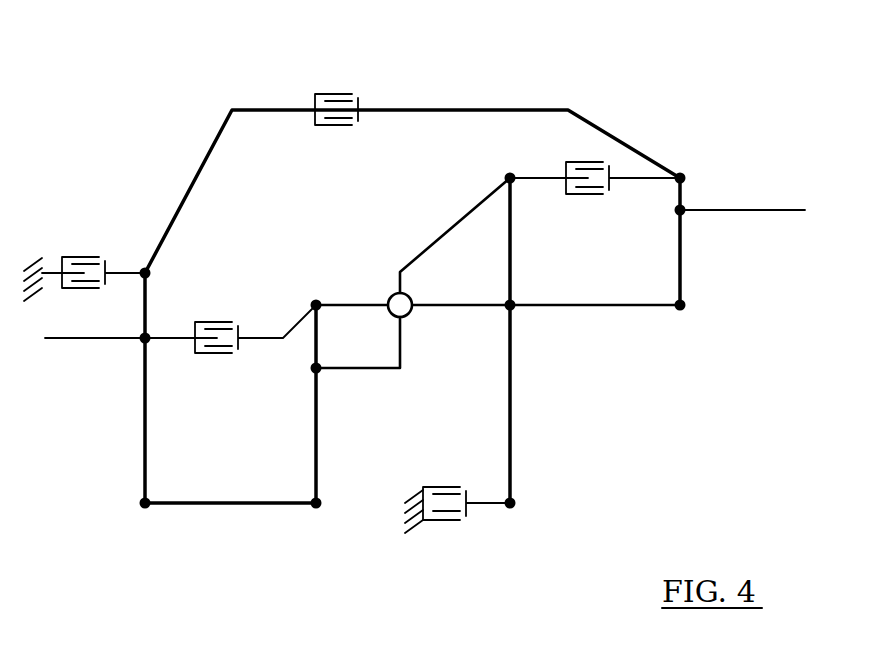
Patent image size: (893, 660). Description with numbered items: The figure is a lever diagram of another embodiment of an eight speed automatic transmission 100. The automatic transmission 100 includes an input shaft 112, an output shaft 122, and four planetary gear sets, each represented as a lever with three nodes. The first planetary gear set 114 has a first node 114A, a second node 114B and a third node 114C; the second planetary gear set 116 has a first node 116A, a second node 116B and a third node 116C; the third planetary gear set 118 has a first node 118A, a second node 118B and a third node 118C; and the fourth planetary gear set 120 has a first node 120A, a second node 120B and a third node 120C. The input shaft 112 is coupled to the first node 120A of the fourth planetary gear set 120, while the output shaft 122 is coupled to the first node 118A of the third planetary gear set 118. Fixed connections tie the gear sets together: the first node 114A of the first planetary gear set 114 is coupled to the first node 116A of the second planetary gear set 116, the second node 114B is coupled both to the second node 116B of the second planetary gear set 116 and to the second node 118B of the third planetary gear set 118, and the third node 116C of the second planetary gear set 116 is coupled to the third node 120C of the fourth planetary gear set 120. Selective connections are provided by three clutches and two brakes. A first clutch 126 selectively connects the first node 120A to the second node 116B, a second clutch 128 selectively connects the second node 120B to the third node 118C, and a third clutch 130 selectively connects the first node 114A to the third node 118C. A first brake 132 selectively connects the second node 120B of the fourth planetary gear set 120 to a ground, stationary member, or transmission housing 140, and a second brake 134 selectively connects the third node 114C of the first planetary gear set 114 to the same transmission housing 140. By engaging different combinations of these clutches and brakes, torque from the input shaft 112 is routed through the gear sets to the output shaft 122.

The eight speed automatic transmission 100 is at (630, 74).
The input shaft 112 is at (100, 343).
The first planetary gear set 114 is at (510, 519).
The first node of the first planetary gear set 114A is at (508, 178).
The second node of the first planetary gear set 114B is at (513, 303).
The third node of the first planetary gear set 114C is at (513, 501).
The second planetary gear set 116 is at (314, 519).
The first node of the second planetary gear set 116A is at (314, 371).
The second node of the second planetary gear set 116B is at (317, 303).
The third node of the second planetary gear set 116C is at (319, 501).
The third planetary gear set 118 is at (680, 325).
The first node of the third planetary gear set 118A is at (683, 213).
The second node of the third planetary gear set 118B is at (684, 308).
The third node of the third planetary gear set 118C is at (683, 177).
The fourth planetary gear set 120 is at (146, 519).
The first node of the fourth planetary gear set 120A is at (150, 342).
The second node of the fourth planetary gear set 120B is at (150, 271).
The third node of the fourth planetary gear set 120C is at (149, 501).
The output shaft 122 is at (768, 209).
The first clutch 126 is at (210, 323).
The second clutch 128 is at (333, 95).
The third clutch 130 is at (577, 162).
The first brake 132 is at (80, 257).
The second brake 134 is at (441, 522).
The transmission housing 140 is at (32, 258).